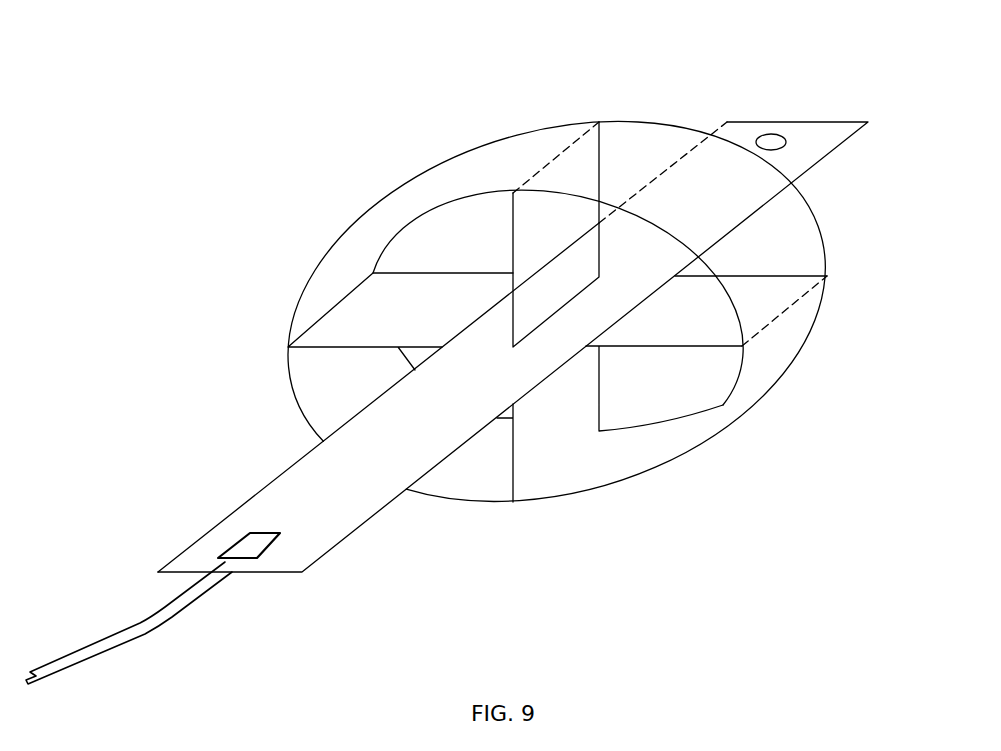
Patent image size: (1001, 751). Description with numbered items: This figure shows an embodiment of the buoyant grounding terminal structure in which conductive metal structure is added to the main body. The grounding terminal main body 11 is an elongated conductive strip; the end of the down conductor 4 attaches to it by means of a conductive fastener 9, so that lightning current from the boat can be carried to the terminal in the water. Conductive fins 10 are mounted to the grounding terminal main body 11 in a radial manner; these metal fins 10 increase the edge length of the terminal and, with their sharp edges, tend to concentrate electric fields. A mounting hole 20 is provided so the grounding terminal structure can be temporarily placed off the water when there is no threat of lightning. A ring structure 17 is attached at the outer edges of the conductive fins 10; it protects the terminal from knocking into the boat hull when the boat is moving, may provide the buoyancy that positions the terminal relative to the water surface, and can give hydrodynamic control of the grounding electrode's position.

The down conductor 4 is at (58, 630).
The conductive fastener 9 is at (238, 542).
The conductive fins 10 is at (498, 233).
The grounding terminal main body 11 is at (372, 545).
The ring structure 17 is at (835, 255).
The mounting hole 20 is at (755, 130).